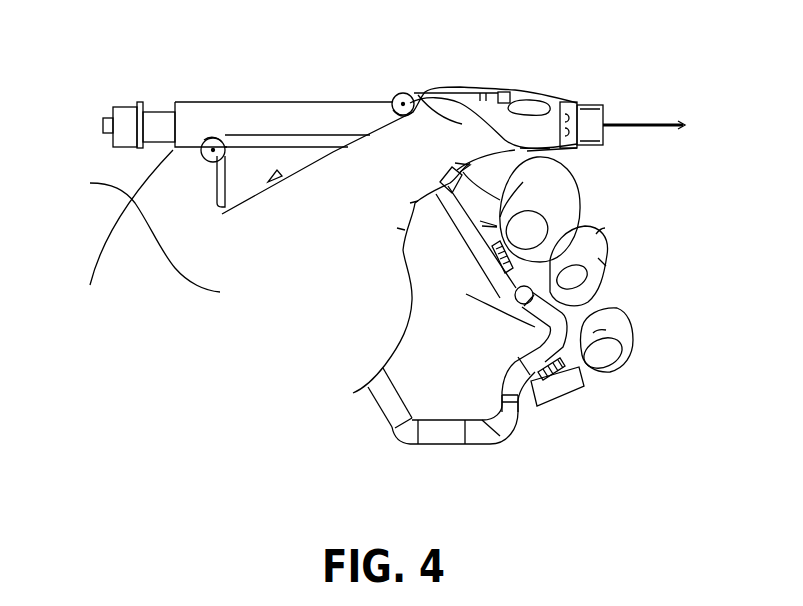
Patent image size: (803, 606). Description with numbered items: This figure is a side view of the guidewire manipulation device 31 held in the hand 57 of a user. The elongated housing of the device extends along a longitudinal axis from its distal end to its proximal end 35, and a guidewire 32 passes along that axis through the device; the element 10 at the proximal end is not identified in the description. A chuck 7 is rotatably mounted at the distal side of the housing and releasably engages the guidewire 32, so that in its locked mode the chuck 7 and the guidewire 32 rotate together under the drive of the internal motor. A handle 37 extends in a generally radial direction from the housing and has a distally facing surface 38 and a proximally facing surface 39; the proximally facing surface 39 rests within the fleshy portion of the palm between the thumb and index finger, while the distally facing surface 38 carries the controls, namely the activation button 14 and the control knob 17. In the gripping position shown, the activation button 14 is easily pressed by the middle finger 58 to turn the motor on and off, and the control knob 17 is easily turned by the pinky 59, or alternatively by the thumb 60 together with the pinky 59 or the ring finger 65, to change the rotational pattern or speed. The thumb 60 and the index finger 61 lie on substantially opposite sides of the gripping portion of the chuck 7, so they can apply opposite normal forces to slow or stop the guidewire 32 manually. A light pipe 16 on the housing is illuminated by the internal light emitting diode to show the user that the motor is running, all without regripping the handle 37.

The end knob 10 is at (126, 107).
The proximal end 35 is at (180, 102).
The guidewire manipulation device 31 is at (289, 101).
The thumb 60 is at (410, 95).
The index finger 61 is at (535, 92).
The chuck 7 is at (590, 105).
The guidewire 32 is at (663, 125).
The hand 57 is at (317, 240).
The light pipe 16 is at (500, 212).
The middle finger 58 is at (580, 206).
The activation button 14 is at (571, 229).
The ring finger 65 is at (598, 263).
The distally facing surface 38 is at (595, 303).
The pinky 59 is at (633, 335).
The control knob 17 is at (573, 392).
The handle 37 is at (500, 436).
The proximally facing surface 39 is at (395, 430).